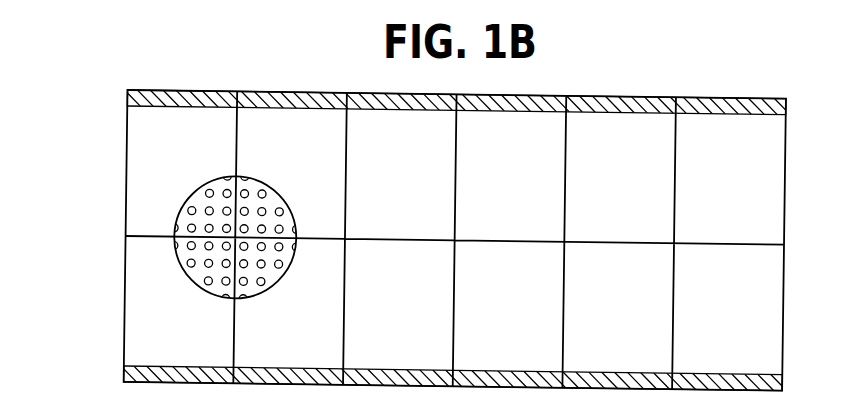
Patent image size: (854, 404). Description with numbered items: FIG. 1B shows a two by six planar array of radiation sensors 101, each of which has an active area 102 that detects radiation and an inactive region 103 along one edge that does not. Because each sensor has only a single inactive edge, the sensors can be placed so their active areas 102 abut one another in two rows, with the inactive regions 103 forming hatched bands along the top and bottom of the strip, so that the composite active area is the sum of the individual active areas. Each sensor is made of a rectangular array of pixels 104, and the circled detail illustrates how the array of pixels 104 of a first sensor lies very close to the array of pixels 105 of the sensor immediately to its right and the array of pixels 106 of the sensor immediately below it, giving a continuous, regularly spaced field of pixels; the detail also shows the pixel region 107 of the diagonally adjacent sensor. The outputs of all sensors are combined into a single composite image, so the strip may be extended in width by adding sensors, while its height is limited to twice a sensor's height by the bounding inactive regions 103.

The sensor 101 is at (118, 168).
The active area 102 is at (138, 213).
The inactive region 103 is at (131, 93).
The array of pixels 104 is at (200, 196).
The array of pixels 105 is at (277, 195).
The array of pixels 106 is at (203, 273).
The lower-right hole quadrant 107 is at (268, 275).